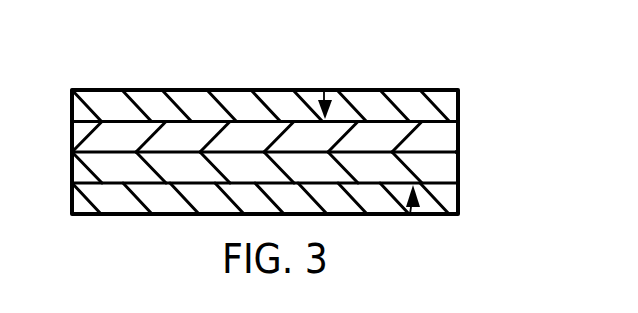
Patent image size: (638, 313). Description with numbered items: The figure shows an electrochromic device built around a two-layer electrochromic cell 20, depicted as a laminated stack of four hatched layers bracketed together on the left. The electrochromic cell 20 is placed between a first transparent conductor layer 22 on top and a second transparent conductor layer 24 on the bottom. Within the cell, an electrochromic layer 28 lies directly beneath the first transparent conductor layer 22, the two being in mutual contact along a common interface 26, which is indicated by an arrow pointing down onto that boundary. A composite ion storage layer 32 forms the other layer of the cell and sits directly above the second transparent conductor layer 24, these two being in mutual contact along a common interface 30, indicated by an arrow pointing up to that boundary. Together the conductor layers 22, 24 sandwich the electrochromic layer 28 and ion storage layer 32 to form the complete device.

The electrochromic cell 20 is at (64, 122).
The first transparent conductor layer 22 is at (217, 90).
The second transparent conductor layer 24 is at (129, 208).
The common interface 26 is at (323, 90).
The electrochromic layer 28 is at (450, 143).
The common interface 30 is at (410, 210).
The composite ion storage layer 32 is at (450, 172).